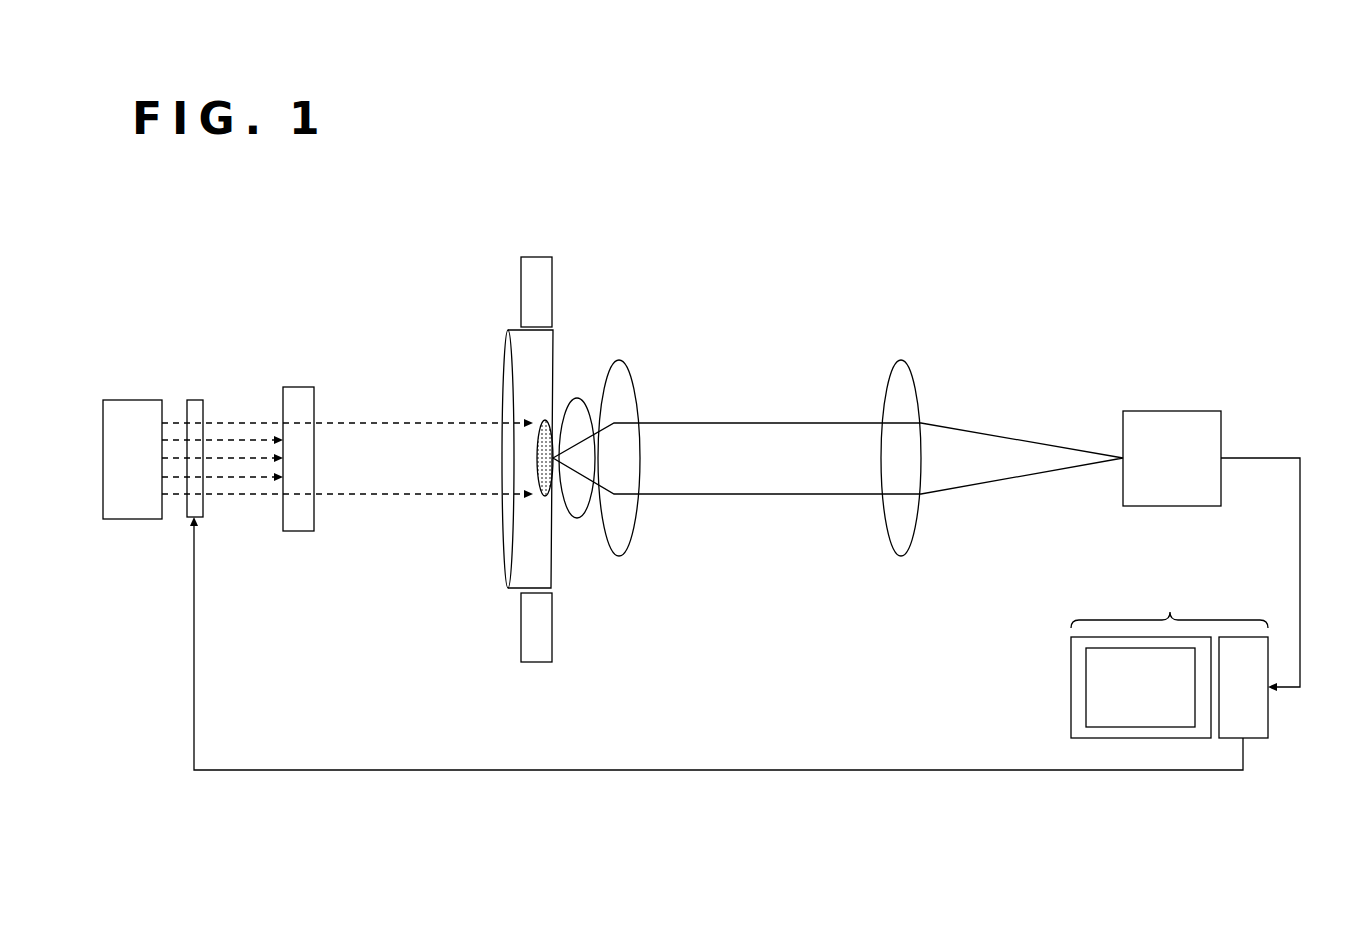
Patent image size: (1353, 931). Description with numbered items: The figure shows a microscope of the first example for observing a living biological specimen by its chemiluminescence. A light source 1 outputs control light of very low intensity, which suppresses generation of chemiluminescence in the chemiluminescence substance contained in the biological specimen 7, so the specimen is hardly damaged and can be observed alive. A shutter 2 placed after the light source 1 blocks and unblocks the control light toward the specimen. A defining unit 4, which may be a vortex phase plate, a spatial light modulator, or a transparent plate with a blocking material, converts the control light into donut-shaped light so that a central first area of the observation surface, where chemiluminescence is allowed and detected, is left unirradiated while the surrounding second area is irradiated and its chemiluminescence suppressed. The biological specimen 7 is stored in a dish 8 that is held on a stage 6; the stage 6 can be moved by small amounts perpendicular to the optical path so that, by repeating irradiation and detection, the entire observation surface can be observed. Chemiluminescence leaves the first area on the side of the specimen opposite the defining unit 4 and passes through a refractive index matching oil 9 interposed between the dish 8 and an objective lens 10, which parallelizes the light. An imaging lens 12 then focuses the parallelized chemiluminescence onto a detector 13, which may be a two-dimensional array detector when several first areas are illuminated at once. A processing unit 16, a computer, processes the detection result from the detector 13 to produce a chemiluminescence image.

The light source 1 is at (135, 400).
The shutter 2 is at (195, 400).
The defining unit 4 is at (299, 387).
The stage 6 is at (540, 257).
The biological specimen 7 is at (541, 497).
The dish 8 is at (553, 345).
The refractive index matching oil 9 is at (578, 398).
The objective lens 10 is at (637, 385).
The imaging lens 12 is at (903, 360).
The detector 13 is at (1183, 411).
The processing unit 16 is at (1170, 612).